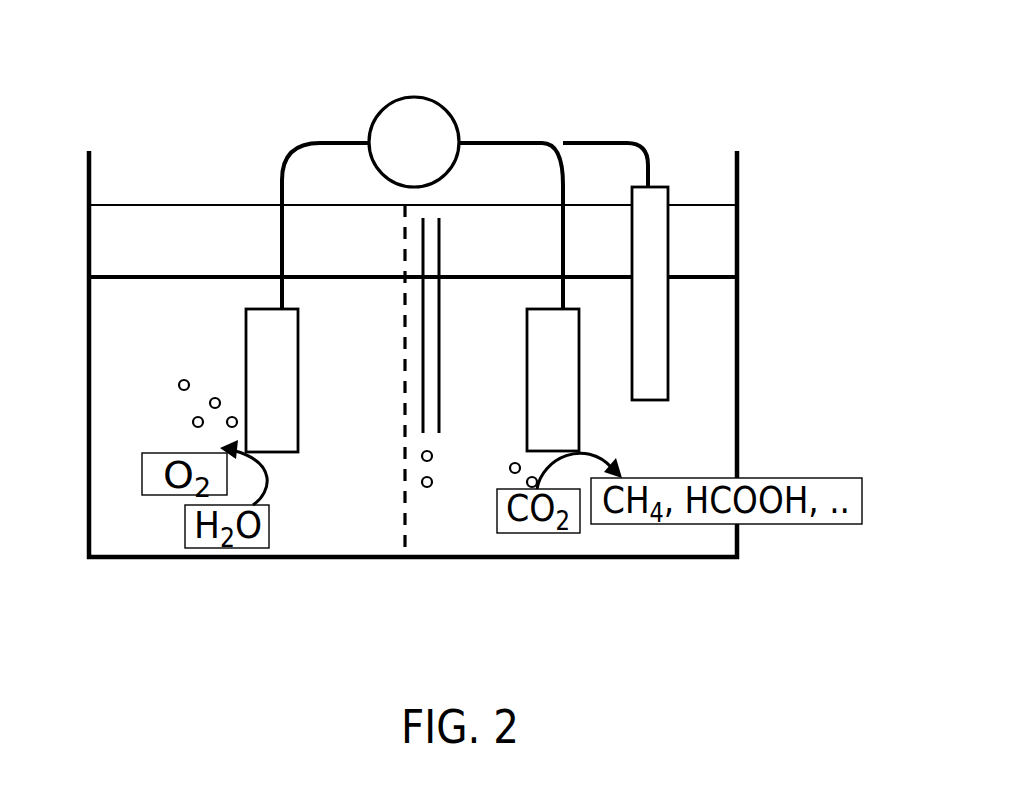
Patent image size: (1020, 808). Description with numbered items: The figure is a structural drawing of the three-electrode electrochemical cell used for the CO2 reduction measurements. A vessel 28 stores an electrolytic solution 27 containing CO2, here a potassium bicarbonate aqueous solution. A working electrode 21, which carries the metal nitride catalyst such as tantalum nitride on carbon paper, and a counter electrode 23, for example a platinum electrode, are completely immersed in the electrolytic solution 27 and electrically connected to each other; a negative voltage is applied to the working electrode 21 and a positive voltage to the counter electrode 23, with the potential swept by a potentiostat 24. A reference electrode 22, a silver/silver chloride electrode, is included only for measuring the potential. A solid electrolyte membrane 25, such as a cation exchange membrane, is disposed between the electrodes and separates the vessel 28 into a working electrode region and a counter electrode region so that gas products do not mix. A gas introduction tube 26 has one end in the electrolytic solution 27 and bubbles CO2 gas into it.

The working electrode 21 is at (557, 363).
The reference electrode 22 is at (650, 303).
The counter electrode 23 is at (255, 330).
The potentiostat 24 is at (418, 107).
The solid electrolyte membrane 25 is at (403, 482).
The gas introduction tube 26 is at (440, 420).
The electrolytic solution 27 is at (707, 433).
The vessel 28 is at (739, 335).